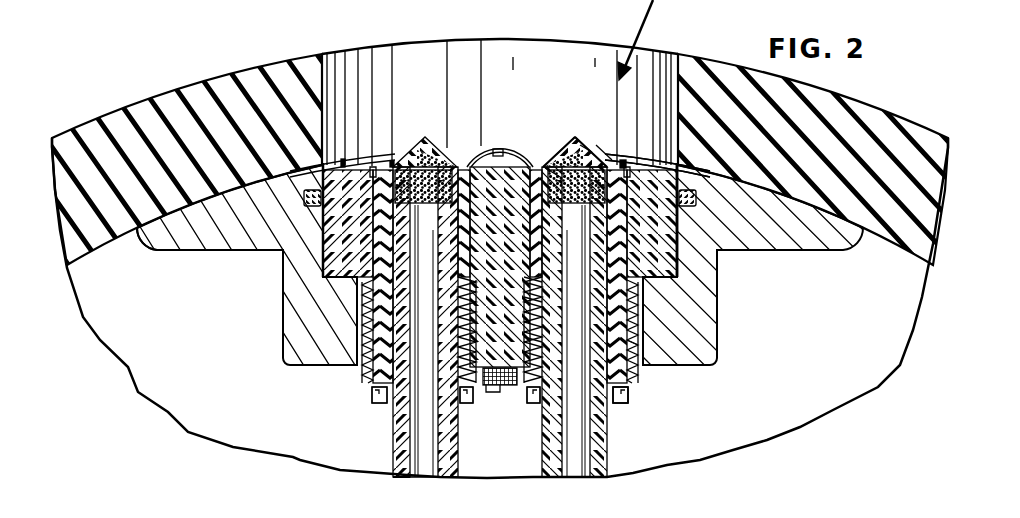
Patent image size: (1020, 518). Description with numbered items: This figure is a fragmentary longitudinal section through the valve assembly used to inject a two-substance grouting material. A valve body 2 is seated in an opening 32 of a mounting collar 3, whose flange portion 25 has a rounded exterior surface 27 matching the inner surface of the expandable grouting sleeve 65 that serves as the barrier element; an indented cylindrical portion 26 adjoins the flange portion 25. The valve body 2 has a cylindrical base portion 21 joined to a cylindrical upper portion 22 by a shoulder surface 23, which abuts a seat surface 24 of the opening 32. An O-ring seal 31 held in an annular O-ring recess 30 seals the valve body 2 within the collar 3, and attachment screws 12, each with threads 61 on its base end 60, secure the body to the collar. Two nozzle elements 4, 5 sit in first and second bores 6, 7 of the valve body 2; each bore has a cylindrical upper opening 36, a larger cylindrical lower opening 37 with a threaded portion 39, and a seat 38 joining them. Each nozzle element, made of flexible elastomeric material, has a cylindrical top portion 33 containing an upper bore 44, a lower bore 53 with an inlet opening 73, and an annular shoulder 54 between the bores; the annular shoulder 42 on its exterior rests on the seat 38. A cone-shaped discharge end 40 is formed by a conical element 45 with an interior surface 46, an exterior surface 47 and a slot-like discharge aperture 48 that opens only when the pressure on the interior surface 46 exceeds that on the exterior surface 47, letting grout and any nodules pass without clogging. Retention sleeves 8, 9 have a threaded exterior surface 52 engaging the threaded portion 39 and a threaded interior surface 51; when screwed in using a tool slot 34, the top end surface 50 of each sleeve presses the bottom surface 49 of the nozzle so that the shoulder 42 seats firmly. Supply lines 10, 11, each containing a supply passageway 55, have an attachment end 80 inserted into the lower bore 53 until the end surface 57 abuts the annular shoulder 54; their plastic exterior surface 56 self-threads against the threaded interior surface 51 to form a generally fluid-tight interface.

The valve body 2 is at (343, 158).
The mounting collar 3 is at (718, 339).
The nozzle element 4 is at (623, 160).
The nozzle element 5 is at (392, 160).
The first bore 6 is at (629, 172).
The second bore 7 is at (373, 166).
The retention sleeve 8 is at (628, 396).
The retention sleeve 9 is at (371, 396).
The supply line 10 is at (607, 450).
The supply line 11 is at (392, 445).
The attachment screw 12 is at (494, 148).
The base portion 21 is at (315, 366).
The upper portion 22 is at (330, 262).
The shoulder surface 23 is at (335, 277).
The seat surface 24 is at (718, 283).
The flange portion 25 is at (193, 252).
The indented cylindrical portion 26 is at (283, 340).
The rounded exterior surface 27 is at (150, 247).
The annular O-ring recess 30 is at (697, 200).
The O-ring seal 31 is at (302, 205).
The opening 32 is at (717, 258).
The cylindrical top portion 33 is at (660, 156).
The tool slot 34 is at (530, 404).
The cylindrical upper opening 36 is at (500, 186).
The cylindrical lower opening 37 is at (388, 232).
The seat 38 is at (395, 210).
The threaded portion 39 is at (372, 390).
The cone-shaped discharge end 40 is at (585, 150).
The annular shoulder 42 is at (522, 200).
The upper bore 44 is at (597, 160).
The conical element 45 is at (572, 148).
The interior surface 46 is at (560, 170).
The exterior surface 47 is at (613, 158).
The discharge aperture 48 is at (430, 140).
The bottom surface 49 is at (630, 340).
The top end surface 50 is at (647, 285).
The threaded interior surface 51 is at (548, 336).
The threaded exterior surface 52 is at (486, 394).
The lower bore 53 is at (545, 278).
The annular shoulder 54 is at (500, 267).
The supply passageway 55 is at (427, 478).
The exterior surface 56 is at (393, 476).
The end surface 57 is at (656, 220).
The base end 60 is at (466, 404).
The threads 61 is at (493, 366).
The expandable grouting sleeve 65 is at (127, 110).
The inlet opening 73 is at (548, 300).
The attachment end 80 is at (668, 248).